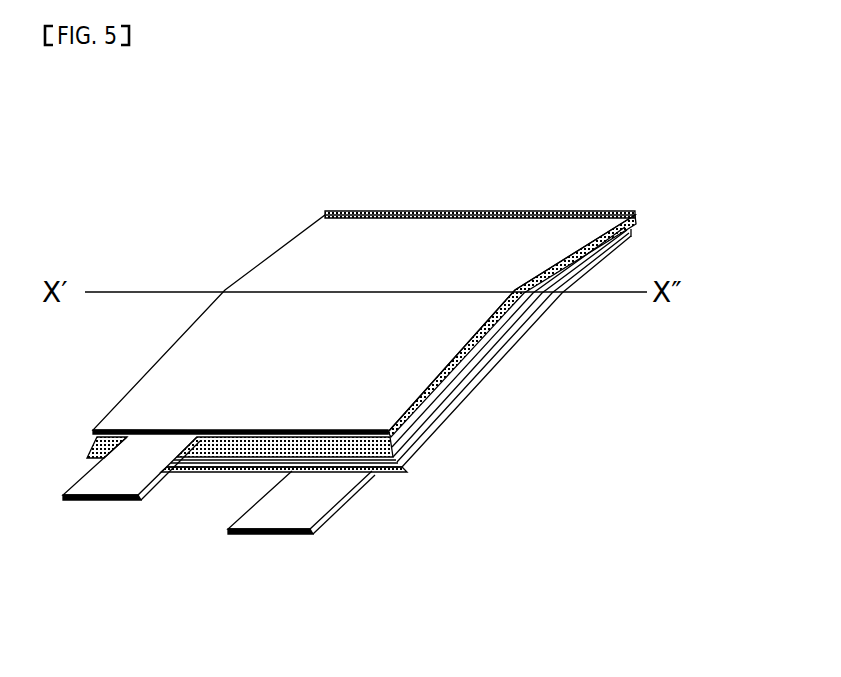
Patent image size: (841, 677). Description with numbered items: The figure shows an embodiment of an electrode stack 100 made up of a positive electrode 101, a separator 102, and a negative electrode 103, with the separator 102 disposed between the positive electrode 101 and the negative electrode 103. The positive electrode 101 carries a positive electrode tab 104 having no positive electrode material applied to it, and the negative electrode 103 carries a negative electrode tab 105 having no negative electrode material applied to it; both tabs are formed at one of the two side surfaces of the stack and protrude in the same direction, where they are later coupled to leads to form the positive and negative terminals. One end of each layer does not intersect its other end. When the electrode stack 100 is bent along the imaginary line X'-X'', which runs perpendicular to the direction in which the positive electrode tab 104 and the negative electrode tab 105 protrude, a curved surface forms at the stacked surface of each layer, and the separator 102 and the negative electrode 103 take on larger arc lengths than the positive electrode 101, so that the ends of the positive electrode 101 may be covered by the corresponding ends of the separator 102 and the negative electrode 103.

The electrode stack 100 is at (395, 389).
The positive electrode 101 is at (402, 470).
The separator 102 is at (635, 217).
The negative electrode 103 is at (533, 228).
The positive electrode tab 104 is at (118, 487).
The negative electrode tab 105 is at (270, 510).